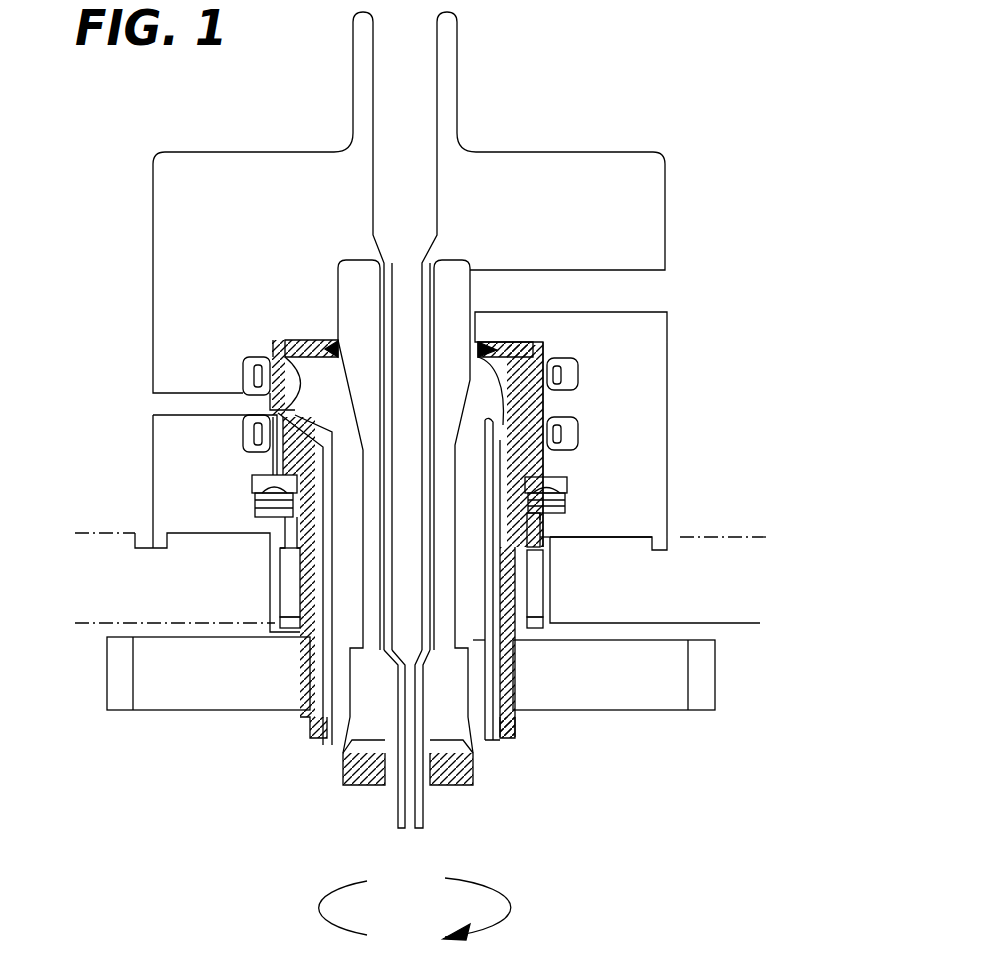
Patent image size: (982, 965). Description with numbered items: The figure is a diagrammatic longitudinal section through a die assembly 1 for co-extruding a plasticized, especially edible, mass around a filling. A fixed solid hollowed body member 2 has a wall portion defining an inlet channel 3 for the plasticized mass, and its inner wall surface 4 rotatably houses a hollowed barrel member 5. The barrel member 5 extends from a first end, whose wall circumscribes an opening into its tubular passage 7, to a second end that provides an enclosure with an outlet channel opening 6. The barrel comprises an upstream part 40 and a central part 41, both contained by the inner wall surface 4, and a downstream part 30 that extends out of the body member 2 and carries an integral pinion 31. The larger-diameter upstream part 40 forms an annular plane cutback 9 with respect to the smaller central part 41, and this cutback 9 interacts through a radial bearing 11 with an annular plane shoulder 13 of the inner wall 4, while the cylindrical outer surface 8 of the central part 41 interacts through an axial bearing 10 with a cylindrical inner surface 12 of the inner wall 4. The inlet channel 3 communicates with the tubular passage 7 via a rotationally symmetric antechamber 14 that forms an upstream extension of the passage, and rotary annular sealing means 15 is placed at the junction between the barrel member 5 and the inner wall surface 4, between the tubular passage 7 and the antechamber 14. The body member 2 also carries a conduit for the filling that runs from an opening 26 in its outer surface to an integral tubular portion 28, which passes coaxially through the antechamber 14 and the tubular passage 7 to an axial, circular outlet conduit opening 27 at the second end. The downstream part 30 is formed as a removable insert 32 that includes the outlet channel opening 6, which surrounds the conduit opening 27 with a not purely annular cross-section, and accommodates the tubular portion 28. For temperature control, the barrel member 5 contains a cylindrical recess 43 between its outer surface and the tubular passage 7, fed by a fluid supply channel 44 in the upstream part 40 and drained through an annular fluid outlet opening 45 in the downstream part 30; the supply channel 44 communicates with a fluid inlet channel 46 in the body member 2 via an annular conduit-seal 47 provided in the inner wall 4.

The die assembly 1 is at (490, 117).
The body member 2 is at (290, 152).
The inlet channel 3 is at (657, 288).
The inner wall surface 4 is at (312, 338).
The barrel member 5 is at (298, 340).
The outlet channel opening 6 is at (393, 790).
The tubular passage 7 is at (360, 380).
The cylindrical outer surface 8 is at (543, 530).
The annular plane cutback 9 is at (545, 490).
The axial bearing 10 is at (287, 572).
The radial bearing 11 is at (252, 475).
The cylindrical inner surface 12 is at (550, 580).
The annular plane shoulder 13 is at (545, 540).
The antechamber 14 is at (367, 275).
The rotary annular sealing means 15 is at (487, 362).
The opening 26 is at (400, 45).
The outlet conduit opening 27 is at (410, 823).
The tubular portion 28 is at (380, 302).
The downstream part 30 is at (478, 693).
The pinion 31 is at (633, 680).
The removable insert 32 is at (448, 763).
The upstream part 40 is at (507, 392).
The central part 41 is at (287, 598).
The cylindrical recess 43 is at (500, 437).
The fluid supply channel 44 is at (287, 343).
The annular fluid outlet opening 45 is at (327, 742).
The fluid inlet channel 46 is at (157, 407).
The annular conduit-seal 47 is at (243, 372).